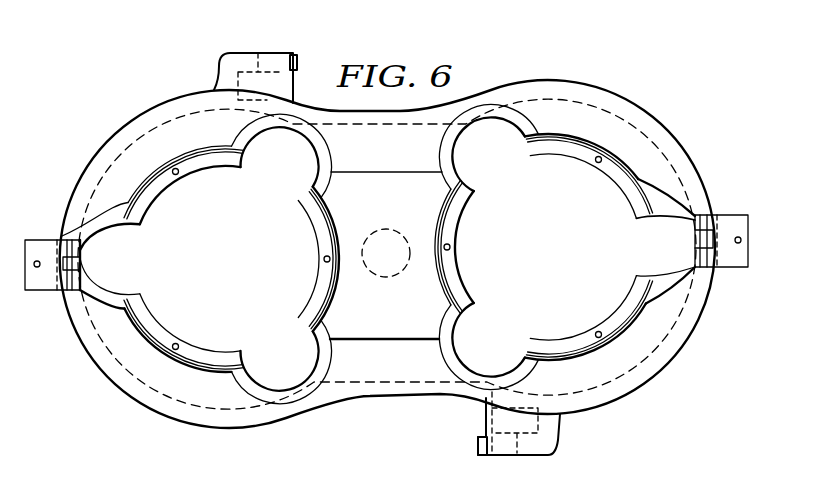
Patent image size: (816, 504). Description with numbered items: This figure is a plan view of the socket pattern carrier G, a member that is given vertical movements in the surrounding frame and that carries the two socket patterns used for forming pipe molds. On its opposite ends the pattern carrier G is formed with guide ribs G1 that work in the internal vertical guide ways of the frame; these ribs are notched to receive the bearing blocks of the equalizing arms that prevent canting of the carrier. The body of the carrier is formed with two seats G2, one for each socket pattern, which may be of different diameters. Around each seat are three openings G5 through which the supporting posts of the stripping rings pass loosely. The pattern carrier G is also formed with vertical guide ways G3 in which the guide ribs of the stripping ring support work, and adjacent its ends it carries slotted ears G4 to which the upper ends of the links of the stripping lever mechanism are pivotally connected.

The pattern carrier G is at (360, 400).
The guide ribs G1 is at (35, 242).
The seats G2 is at (145, 203).
The vertical guide ways G3 is at (73, 265).
The slotted ear G4 is at (298, 58).
The openings G5 is at (387, 253).